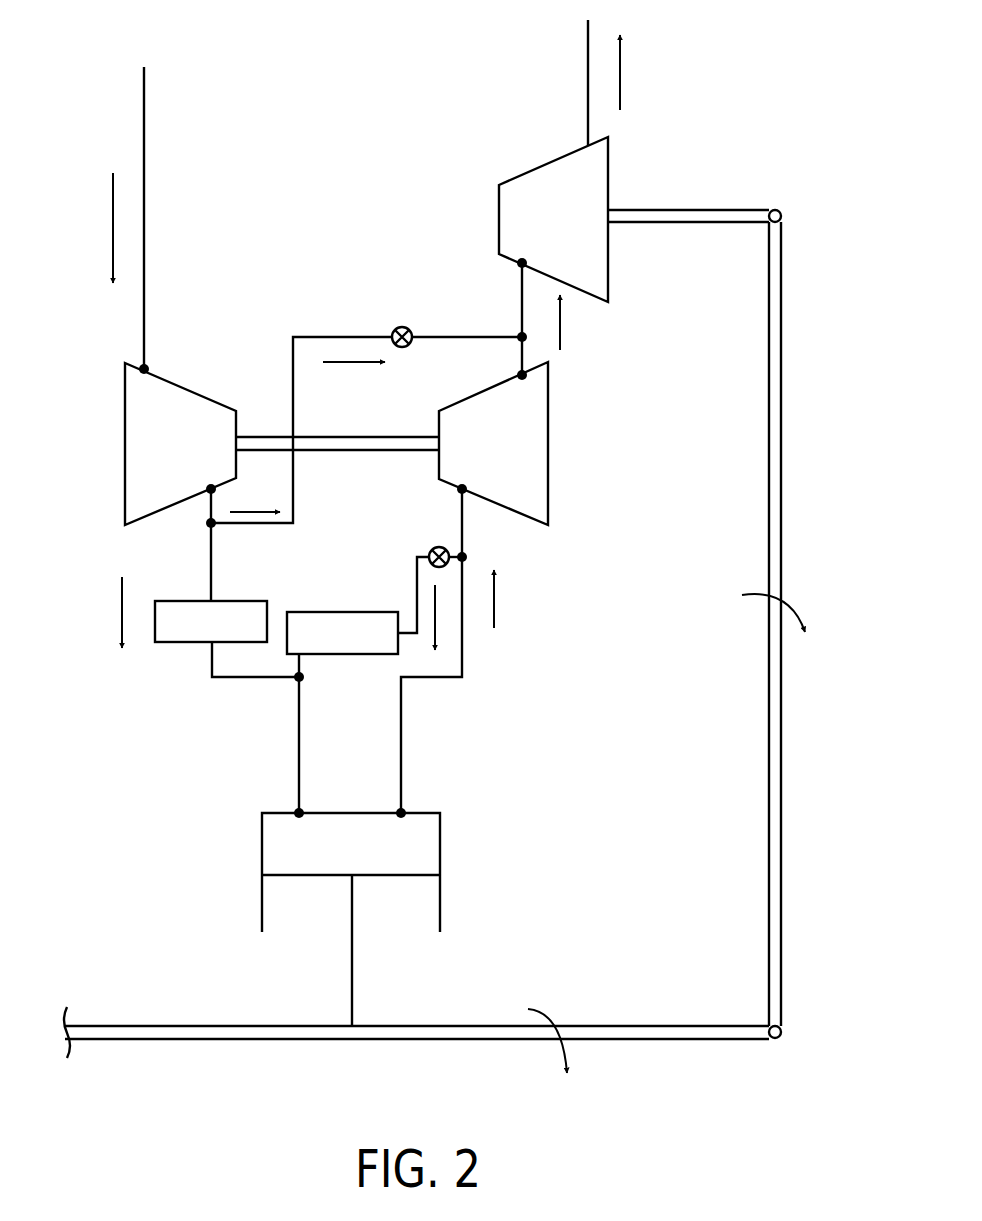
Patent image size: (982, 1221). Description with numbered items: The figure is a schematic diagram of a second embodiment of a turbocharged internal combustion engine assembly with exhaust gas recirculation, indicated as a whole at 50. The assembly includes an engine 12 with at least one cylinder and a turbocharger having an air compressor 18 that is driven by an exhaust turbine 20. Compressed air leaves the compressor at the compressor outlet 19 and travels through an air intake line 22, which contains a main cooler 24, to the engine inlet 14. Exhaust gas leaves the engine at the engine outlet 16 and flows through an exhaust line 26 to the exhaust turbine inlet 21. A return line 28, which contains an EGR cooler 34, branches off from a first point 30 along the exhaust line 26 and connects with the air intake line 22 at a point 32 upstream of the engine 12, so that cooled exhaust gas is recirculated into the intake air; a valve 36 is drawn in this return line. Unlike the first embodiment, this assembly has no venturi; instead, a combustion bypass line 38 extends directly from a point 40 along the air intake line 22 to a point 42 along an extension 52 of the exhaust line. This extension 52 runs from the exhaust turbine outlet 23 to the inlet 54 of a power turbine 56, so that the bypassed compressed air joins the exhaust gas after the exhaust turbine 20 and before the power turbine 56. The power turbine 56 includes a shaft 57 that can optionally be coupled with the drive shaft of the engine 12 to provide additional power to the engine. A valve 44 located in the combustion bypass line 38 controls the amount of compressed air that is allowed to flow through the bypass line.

The engine 12 is at (442, 897).
The engine inlet 14 is at (296, 810).
The engine outlet 16 is at (405, 810).
The air compressor 18 is at (123, 417).
The compressor outlet 19 is at (213, 489).
The exhaust turbine 20 is at (548, 470).
The exhaust turbine inlet 21 is at (457, 490).
The air intake line 22 is at (208, 560).
The exhaust turbine outlet 23 is at (517, 375).
The main cooler 24 is at (175, 645).
The exhaust line 26 is at (462, 648).
The return line 28 is at (413, 588).
The first point 30 is at (468, 557).
The point 32 is at (303, 678).
The EGR cooler 34 is at (300, 610).
The EGR valve 36 is at (430, 552).
The combustion bypass line 38 is at (292, 355).
The point 40 is at (207, 525).
The point 42 is at (524, 338).
The valve 44 is at (402, 327).
The turbocharged internal combustion engine assembly 50 is at (811, 23).
The extension 52 is at (518, 310).
The inlet 54 is at (517, 265).
The power turbine 56 is at (536, 167).
The shaft 57 is at (708, 208).